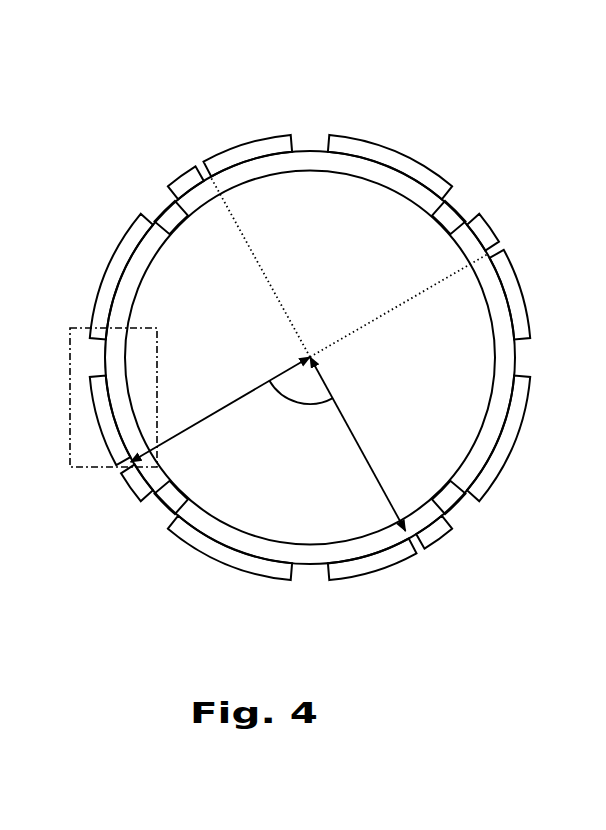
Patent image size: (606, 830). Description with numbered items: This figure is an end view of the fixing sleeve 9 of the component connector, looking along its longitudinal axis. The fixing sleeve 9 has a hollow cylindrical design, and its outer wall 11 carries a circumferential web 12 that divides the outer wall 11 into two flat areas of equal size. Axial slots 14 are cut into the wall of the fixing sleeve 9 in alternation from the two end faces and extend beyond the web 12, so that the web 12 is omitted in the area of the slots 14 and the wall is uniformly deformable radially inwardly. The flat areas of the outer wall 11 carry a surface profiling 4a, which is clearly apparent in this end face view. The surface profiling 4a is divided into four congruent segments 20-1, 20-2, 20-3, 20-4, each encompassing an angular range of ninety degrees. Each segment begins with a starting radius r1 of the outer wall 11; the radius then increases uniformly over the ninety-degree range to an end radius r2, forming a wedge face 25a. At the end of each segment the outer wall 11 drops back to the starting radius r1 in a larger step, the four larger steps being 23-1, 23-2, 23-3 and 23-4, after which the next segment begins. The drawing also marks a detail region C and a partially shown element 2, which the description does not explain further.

The fixing sleeve 9 is at (133, 67).
The outer wall 11 is at (505, 476).
The circumferential web 12 is at (368, 147).
The axial slots 14 is at (158, 208).
The surface profiling 4a is at (244, 163).
The larger step 23-1 is at (128, 463).
The larger step 23-2 is at (204, 178).
The larger step 23-3 is at (486, 256).
The larger step 23-4 is at (400, 543).
The wedge face 25a is at (200, 545).
The segment 20-1 is at (297, 483).
The segment 20-2 is at (197, 330).
The segment 20-3 is at (339, 258).
The segment 20-4 is at (421, 386).
The device 2 is at (603, 287).
The detail region C is at (69, 328).
The starting radius r1 is at (358, 444).
The end radius r2 is at (220, 409).